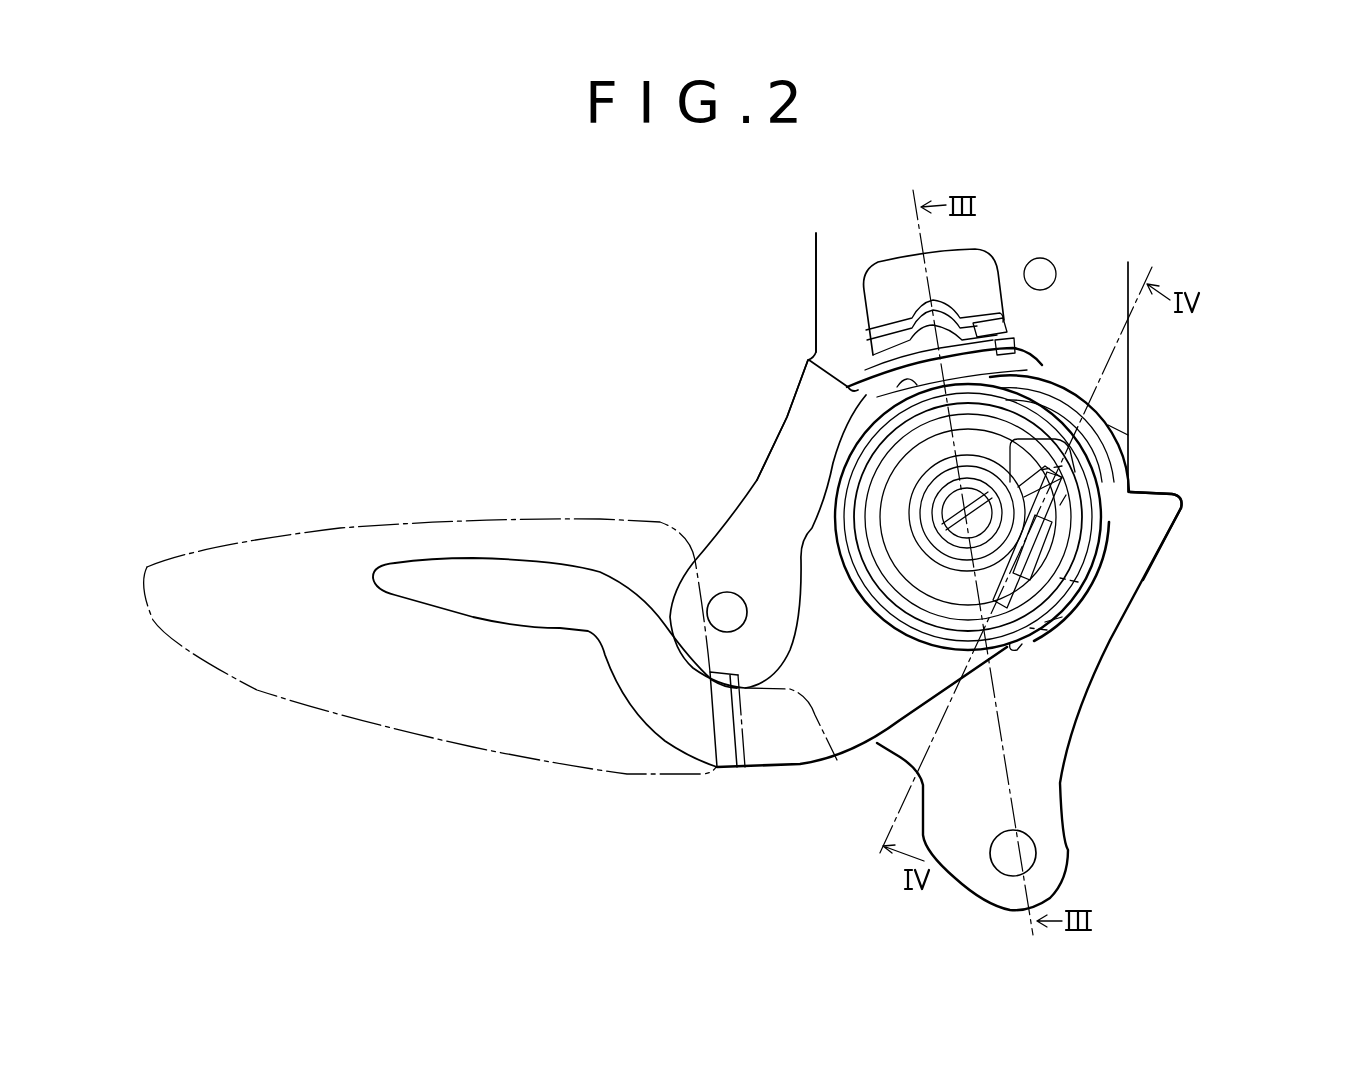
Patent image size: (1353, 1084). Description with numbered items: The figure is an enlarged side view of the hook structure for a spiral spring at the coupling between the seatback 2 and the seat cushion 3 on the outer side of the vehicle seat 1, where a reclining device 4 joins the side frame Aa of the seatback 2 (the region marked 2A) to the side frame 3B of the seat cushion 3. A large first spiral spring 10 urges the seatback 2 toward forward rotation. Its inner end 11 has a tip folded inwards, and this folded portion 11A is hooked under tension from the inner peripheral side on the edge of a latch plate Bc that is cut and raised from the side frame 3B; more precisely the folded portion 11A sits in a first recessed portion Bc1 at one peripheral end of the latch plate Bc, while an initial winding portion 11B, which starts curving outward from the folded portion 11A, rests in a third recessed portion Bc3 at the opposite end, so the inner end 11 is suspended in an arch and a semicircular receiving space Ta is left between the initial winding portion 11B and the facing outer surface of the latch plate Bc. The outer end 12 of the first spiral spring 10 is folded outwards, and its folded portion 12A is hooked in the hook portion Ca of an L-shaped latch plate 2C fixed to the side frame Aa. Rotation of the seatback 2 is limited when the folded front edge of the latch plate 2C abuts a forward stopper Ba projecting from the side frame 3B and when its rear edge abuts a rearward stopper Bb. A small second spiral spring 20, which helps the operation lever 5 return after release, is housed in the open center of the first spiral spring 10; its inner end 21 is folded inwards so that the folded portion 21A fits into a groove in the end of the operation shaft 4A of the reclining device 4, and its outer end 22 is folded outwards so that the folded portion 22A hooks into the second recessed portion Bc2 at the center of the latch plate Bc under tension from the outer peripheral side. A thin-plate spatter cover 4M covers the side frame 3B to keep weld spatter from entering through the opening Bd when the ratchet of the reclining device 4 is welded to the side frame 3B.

The vehicle seat 1 is at (594, 290).
The seatback 2 is at (1110, 259).
The mounting portion 2A is at (857, 315).
The side frame Aa is at (835, 270).
The L-shaped latch plate 2C is at (963, 278).
The hook portion Ca is at (1000, 340).
The seat cushion 3 is at (1029, 701).
The side frame 3B is at (1040, 722).
The reclining device 4 is at (1107, 406).
The operation shaft 4A is at (938, 480).
The spatter cover 4M is at (1003, 350).
The opening Bd is at (1055, 339).
The operation lever 5 is at (518, 593).
The first spiral spring 10 is at (826, 447).
The inner end 11 is at (1190, 388).
The folded portion 11A is at (1108, 425).
The initial winding portion 11B is at (1062, 617).
The outer end 12 is at (1051, 315).
The folded portion 12A is at (1012, 336).
The second spiral spring 20 is at (1005, 452).
The inner end 21 is at (921, 593).
The folded portion 21A is at (945, 500).
The outer end 22 is at (1146, 537).
The folded portion 22A is at (1062, 548).
The forward stopper Ba is at (812, 372).
The rearward stopper Bb is at (1160, 512).
The latch plate Bc is at (1066, 495).
The first recessed portion Bc1 is at (1062, 466).
The second recessed portion Bc2 is at (1078, 582).
The third recessed portion Bc3 is at (1047, 630).
The receiving space Ta is at (1132, 495).